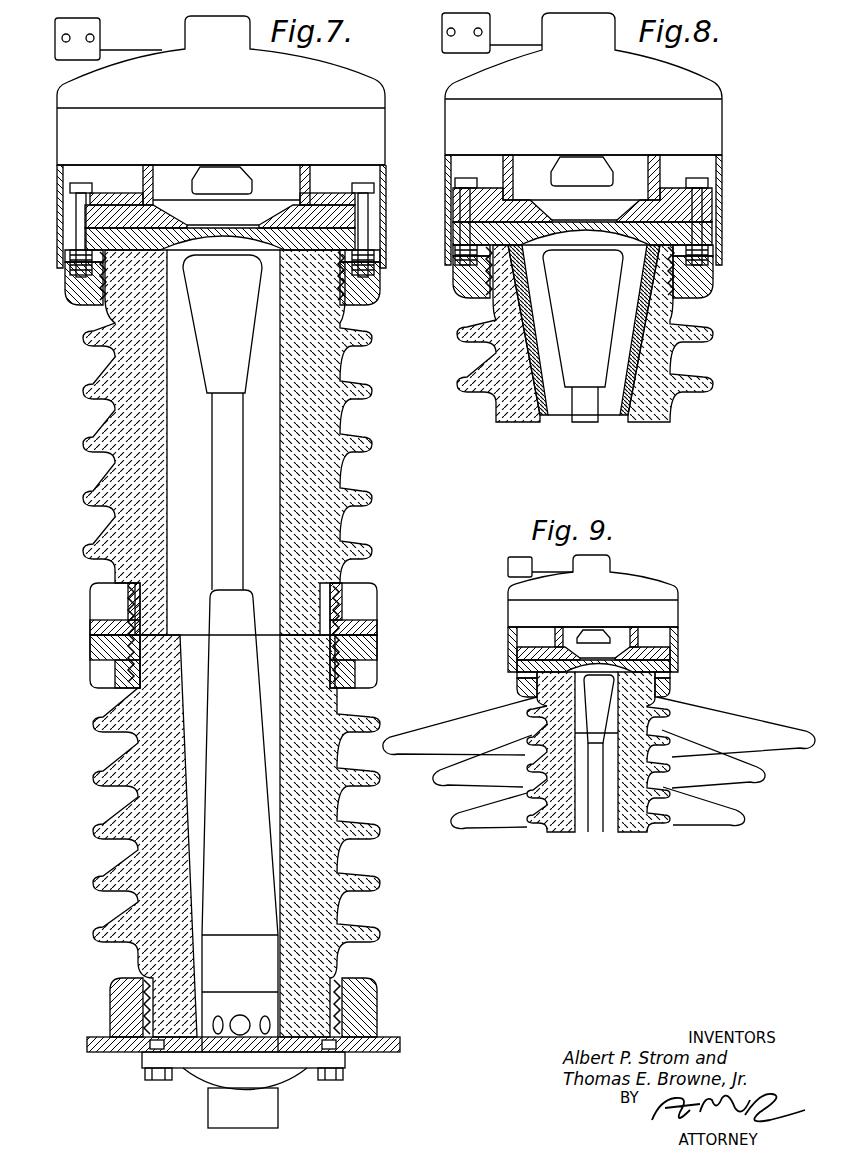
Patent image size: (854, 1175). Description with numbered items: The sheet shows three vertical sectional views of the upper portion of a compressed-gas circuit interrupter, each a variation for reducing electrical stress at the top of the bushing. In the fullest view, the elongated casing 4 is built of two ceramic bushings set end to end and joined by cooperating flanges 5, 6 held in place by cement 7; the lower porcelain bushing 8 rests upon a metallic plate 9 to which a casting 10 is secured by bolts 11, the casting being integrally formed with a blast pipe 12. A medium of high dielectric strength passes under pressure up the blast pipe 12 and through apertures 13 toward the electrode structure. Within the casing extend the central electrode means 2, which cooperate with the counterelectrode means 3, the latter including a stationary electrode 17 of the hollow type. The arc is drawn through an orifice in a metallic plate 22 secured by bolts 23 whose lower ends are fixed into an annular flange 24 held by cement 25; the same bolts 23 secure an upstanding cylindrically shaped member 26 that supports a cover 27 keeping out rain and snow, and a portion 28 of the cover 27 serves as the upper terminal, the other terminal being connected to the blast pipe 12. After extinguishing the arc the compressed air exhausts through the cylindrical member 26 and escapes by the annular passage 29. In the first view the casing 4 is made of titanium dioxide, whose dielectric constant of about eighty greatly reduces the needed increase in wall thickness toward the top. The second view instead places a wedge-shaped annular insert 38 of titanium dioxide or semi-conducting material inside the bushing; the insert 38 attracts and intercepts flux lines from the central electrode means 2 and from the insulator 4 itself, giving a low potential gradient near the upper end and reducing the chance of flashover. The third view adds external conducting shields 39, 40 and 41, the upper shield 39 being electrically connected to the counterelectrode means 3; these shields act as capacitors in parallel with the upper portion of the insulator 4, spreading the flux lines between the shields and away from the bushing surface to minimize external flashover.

In FIG. 7, the central electrode means 2 is at (216, 323).
In FIG. 8, the central electrode means 2 is at (577, 314).
In FIG. 9, the central electrode means 2 is at (613, 827).
In FIG. 7, the counterelectrode means 3 is at (275, 187).
In FIG. 8, the counterelectrode means 3 is at (637, 178).
In FIG. 9, the counterelectrode means 3 is at (613, 647).
In FIG. 7, the elongated casing 4 is at (366, 394).
In FIG. 8, the elongated casing 4 is at (705, 326).
In FIG. 9, the elongated casing 4 is at (655, 728).
In FIG. 7, the cooperating flange 5 is at (372, 624).
In FIG. 7, the cooperating flange 6 is at (375, 651).
In FIG. 7, the cement 7 is at (341, 689).
In FIG. 7, the lower porcelain bushing 8 is at (378, 829).
In FIG. 7, the metallic plate 9 is at (394, 1036).
In FIG. 7, the casting 10 is at (291, 1077).
In FIG. 7, the bolts 11 is at (334, 1074).
In FIG. 7, the blast pipe 12 is at (278, 1116).
In FIG. 7, the apertures 13 is at (263, 1013).
In FIG. 7, the stationary electrode 17 is at (192, 186).
In FIG. 8, the stationary electrode 17 is at (553, 184).
In FIG. 9, the stationary electrode 17 is at (585, 636).
In FIG. 7, the metallic plate 22 is at (386, 237).
In FIG. 8, the metallic plate 22 is at (722, 229).
In FIG. 7, the bolts 23 is at (357, 184).
In FIG. 8, the bolts 23 is at (699, 178).
In FIG. 7, the annular flange 24 is at (380, 293).
In FIG. 8, the annular flange 24 is at (716, 287).
In FIG. 9, the annular flange 24 is at (517, 691).
In FIG. 7, the cement 25 is at (352, 307).
In FIG. 8, the cement 25 is at (487, 300).
In FIG. 9, the cement 25 is at (680, 658).
In FIG. 7, the cylindrically shaped member 26 is at (150, 165).
In FIG. 7, the cover 27 is at (376, 86).
In FIG. 8, the cover 27 is at (722, 118).
In FIG. 9, the cover 27 is at (680, 609).
In FIG. 7, the portion of the cover 28 is at (55, 41).
In FIG. 8, the portion of the cover 28 is at (442, 33).
In FIG. 9, the portion of the cover 28 is at (508, 568).
In FIG. 7, the annular passage 29 is at (380, 272).
In FIG. 8, the annular passage 29 is at (724, 266).
In FIG. 9, the annular passage 29 is at (679, 681).
In FIG. 8, the wedge-shaped annular insert 38 is at (541, 341).
In FIG. 9, the upper conducting shield 39 is at (712, 717).
In FIG. 9, the conducting shield 40 is at (705, 753).
In FIG. 9, the conducting shield 41 is at (708, 807).